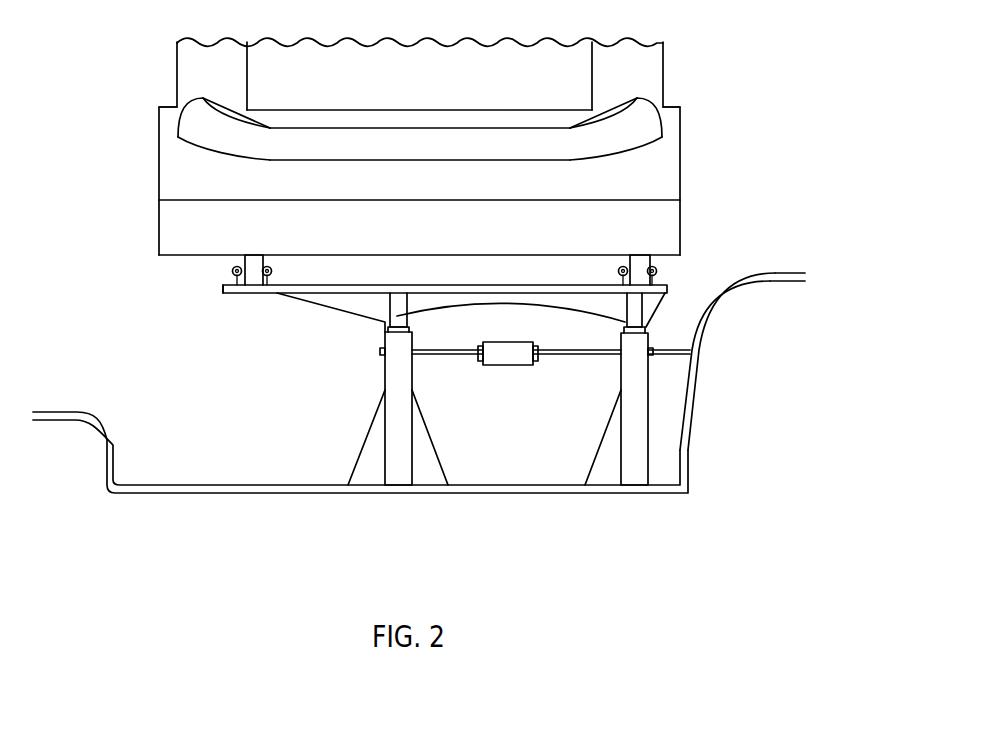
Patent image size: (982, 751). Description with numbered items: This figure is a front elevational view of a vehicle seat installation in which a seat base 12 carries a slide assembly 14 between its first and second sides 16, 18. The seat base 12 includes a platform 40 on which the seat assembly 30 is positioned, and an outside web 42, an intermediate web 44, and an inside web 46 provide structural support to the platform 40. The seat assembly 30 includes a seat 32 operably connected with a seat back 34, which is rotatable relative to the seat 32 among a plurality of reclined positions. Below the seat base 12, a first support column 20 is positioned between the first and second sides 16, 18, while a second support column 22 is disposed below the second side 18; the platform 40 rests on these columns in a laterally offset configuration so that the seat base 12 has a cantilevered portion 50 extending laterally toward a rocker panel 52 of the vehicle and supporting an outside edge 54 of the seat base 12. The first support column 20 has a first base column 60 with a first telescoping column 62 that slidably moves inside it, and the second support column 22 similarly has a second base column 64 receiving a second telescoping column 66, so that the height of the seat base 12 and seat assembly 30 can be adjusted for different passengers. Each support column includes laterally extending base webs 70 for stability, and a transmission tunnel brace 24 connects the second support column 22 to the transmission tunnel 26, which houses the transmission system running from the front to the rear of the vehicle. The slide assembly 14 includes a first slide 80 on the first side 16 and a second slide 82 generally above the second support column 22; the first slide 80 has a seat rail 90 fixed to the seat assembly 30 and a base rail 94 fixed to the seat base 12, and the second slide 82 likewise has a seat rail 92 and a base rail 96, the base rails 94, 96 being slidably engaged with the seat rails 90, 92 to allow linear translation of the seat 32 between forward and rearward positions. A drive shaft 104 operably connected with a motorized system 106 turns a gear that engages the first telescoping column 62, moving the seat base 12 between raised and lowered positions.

The seat base 12 is at (203, 379).
The slide assembly 14 is at (198, 277).
The first side 16 is at (157, 187).
The second side 18 is at (680, 147).
The first support column 20 is at (384, 381).
The second support column 22 is at (620, 373).
The transmission tunnel brace 24 is at (668, 392).
The transmission tunnel 26 is at (770, 272).
The seat assembly 30 is at (719, 102).
The seat 32 is at (437, 190).
The seat back 34 is at (437, 85).
The platform 40 is at (432, 286).
The outside web 42 is at (357, 307).
The intermediate web 44 is at (518, 301).
The inside web 46 is at (650, 307).
The cantilevered portion 50 is at (255, 294).
The rocker panel 52 is at (63, 411).
The outside edge 54 is at (170, 257).
The first base column 60 is at (398, 471).
The first telescoping column 62 is at (400, 310).
The second base column 64 is at (636, 471).
The second telescoping column 66 is at (633, 307).
The base webs 70 is at (370, 463).
The first slide 80 is at (274, 269).
The second slide 82 is at (614, 267).
The seat rail 90 is at (248, 255).
The seat rail 92 is at (648, 256).
The base rail 94 is at (232, 281).
The base rail 96 is at (655, 281).
The drive shaft 104 is at (382, 353).
The motorized system 106 is at (497, 361).